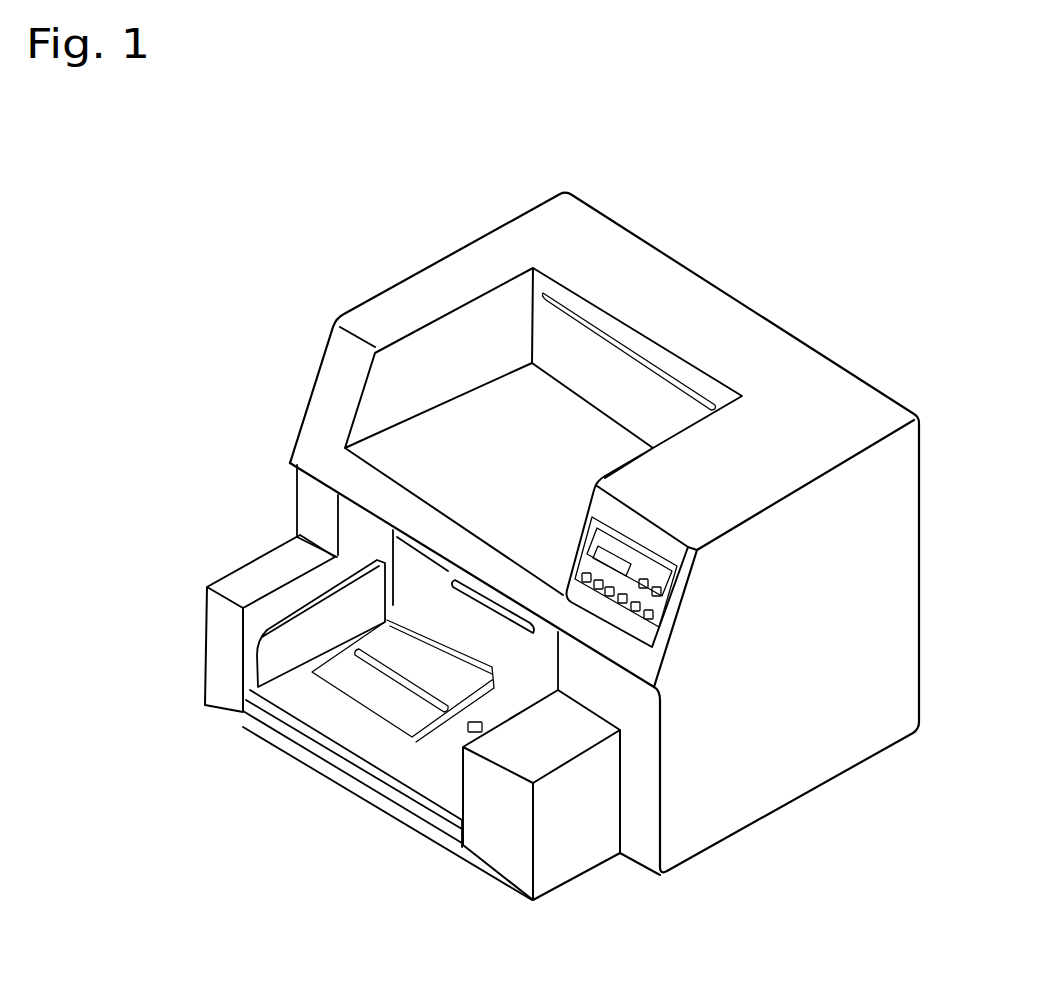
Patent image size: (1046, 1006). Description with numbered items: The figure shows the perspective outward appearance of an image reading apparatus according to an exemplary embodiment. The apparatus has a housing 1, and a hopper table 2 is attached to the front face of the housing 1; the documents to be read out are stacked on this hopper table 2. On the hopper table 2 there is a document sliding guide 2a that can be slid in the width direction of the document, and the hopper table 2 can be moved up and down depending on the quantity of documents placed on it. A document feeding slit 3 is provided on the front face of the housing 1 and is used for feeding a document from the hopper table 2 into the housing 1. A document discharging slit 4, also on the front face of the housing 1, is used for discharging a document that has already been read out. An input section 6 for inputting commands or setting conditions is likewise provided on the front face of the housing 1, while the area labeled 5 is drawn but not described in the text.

The housing 1 is at (777, 345).
The hopper table 2 is at (412, 777).
The document sliding guide 2a is at (457, 755).
The document feeding slit 3 is at (393, 547).
The document discharging slit 4 is at (633, 353).
The paper stacking platform 5 is at (493, 428).
The input section 6 is at (663, 612).